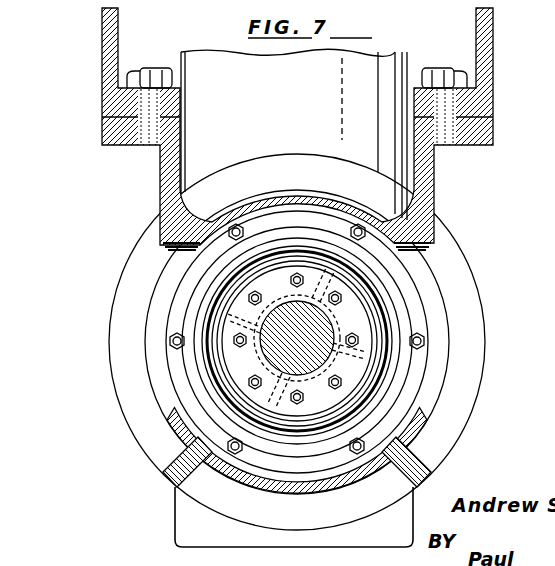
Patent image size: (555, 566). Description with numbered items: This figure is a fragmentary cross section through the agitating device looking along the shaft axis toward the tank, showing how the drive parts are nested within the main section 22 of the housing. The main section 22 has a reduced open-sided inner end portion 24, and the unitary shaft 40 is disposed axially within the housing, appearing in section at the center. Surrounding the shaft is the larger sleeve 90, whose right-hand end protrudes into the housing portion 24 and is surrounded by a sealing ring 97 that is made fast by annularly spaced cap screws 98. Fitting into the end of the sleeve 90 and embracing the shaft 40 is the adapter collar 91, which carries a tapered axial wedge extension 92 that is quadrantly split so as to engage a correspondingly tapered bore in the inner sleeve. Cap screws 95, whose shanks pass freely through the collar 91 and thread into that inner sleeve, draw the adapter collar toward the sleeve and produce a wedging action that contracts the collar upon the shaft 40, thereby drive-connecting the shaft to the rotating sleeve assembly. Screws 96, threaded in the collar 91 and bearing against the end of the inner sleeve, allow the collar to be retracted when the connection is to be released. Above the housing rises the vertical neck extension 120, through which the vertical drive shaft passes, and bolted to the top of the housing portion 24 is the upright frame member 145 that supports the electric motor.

The main section of housing 22 is at (104, 394).
The reduced open sided inner end portion 24 is at (305, 193).
The shaft 40 is at (320, 327).
The sleeve 90 is at (232, 308).
The adapter collar 91 is at (246, 325).
The tapered axial wedge extension 92 is at (380, 335).
The cap screws 95 is at (302, 278).
The screws 96 is at (340, 297).
The sealing ring 97 is at (226, 290).
The cap screws 98 is at (352, 231).
The vertical neck extension 120 is at (372, 65).
The upright frame member 145 is at (112, 31).